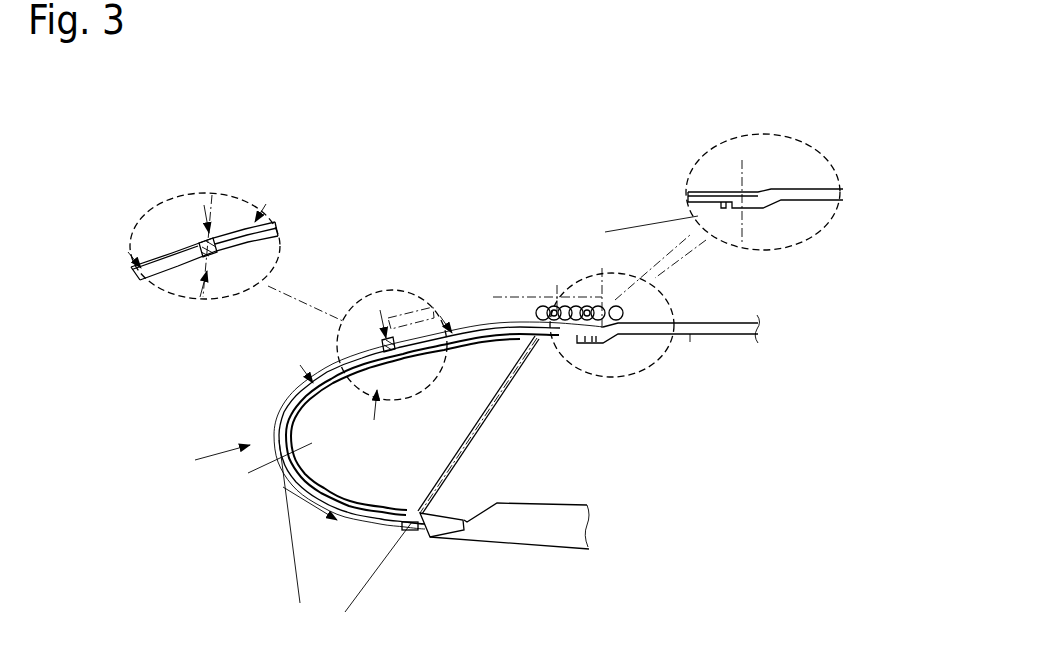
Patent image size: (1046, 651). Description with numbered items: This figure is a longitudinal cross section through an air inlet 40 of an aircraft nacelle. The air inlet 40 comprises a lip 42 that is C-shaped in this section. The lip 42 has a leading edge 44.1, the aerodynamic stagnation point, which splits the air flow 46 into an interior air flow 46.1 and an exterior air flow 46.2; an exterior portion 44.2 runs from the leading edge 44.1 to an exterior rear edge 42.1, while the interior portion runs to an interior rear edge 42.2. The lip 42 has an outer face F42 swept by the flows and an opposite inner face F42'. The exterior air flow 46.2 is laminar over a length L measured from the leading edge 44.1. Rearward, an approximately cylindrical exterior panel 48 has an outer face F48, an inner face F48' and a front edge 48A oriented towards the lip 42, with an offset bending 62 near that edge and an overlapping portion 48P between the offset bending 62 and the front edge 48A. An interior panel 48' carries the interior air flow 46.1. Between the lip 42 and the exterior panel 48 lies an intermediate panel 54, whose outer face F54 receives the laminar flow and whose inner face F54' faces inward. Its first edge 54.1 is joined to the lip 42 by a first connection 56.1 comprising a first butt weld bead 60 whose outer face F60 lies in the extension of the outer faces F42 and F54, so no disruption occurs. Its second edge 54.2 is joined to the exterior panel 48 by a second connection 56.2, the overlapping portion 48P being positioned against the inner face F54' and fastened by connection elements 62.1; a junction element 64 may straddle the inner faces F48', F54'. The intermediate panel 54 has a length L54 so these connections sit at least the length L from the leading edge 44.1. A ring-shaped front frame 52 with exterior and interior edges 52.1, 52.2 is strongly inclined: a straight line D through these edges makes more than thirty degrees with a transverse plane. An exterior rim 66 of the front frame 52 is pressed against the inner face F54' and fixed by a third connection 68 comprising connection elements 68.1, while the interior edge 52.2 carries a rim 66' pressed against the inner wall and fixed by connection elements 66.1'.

The air inlet 40 is at (213, 503).
The lip 42 is at (270, 398).
The exterior rear edge 42.1 is at (193, 281).
The interior rear edge 42.2 is at (457, 540).
The leading edge 44.1 is at (268, 433).
The exterior portion 44.2 is at (300, 375).
The air flow 46 is at (212, 458).
The interior air flow 46.1 is at (282, 508).
The exterior air flow 46.2 is at (283, 372).
The exterior panel 48 is at (735, 247).
The interior panel 48' is at (563, 526).
The front edge 48A is at (598, 348).
The overlapping portion 48P is at (755, 237).
The front frame 52 is at (505, 442).
The exterior edge 52.1 is at (487, 336).
The interior edge 52.2 is at (447, 511).
The intermediate panel 54 is at (258, 212).
The first edge 54.1 is at (235, 247).
The second edge 54.2 is at (600, 302).
The first connection 56.1 is at (200, 297).
The second connection 56.2 is at (605, 355).
The first butt weld bead 60 is at (213, 205).
The offset bending 62 is at (795, 222).
The connection elements 62.1 is at (740, 182).
The junction element 64 is at (700, 213).
The exterior rim 66 is at (613, 291).
The rim 66' is at (381, 567).
The connection elements 66.1' is at (419, 581).
The third connection 68 is at (566, 352).
The connection elements 68.1 is at (541, 302).
The straight line D is at (553, 300).
The length L is at (290, 378).
The length L54 is at (546, 289).
The outer face F42 is at (206, 284).
The inner face F42' is at (226, 473).
The outer face F48 is at (651, 247).
The inner face F48' is at (728, 351).
The outer face F54 is at (345, 244).
The inner face F54' is at (446, 399).
The outer face F60 is at (204, 205).